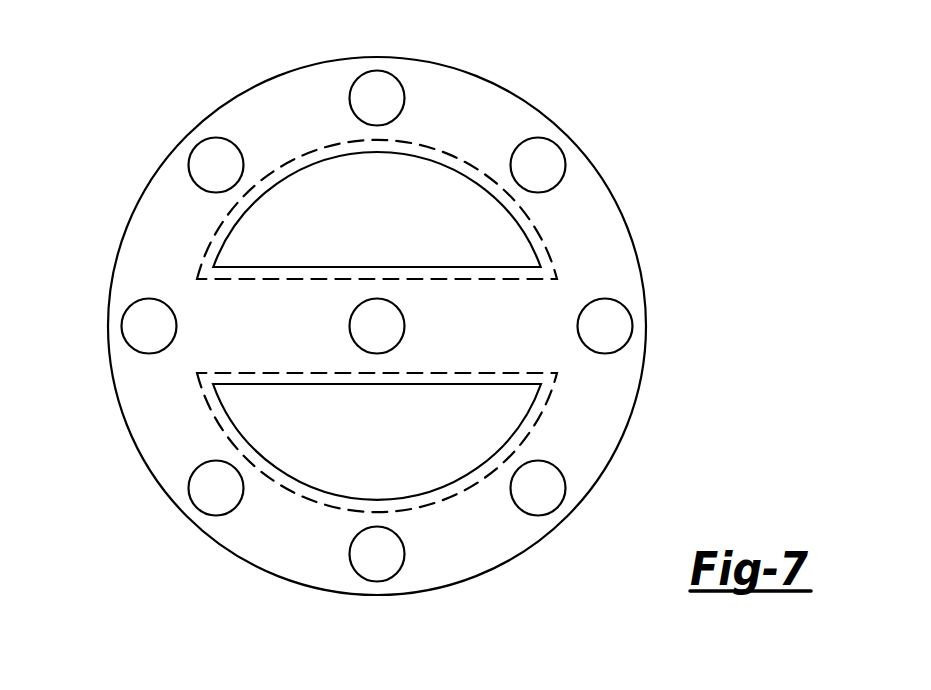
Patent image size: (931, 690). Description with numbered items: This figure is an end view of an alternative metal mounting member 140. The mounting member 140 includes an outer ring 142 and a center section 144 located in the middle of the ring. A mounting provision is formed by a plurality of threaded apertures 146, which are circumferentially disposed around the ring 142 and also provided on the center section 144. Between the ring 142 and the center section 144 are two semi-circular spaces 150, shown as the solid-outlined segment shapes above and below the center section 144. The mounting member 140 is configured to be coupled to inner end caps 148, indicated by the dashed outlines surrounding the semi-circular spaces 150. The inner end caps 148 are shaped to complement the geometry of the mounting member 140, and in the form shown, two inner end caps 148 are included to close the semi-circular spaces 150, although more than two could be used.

The mounting member 140 is at (628, 88).
The ring 142 is at (443, 92).
The center section 144 is at (425, 318).
The threaded apertures 146 is at (373, 90).
The inner end caps 148 is at (555, 247).
The semi-circular spaces 150 is at (265, 243).